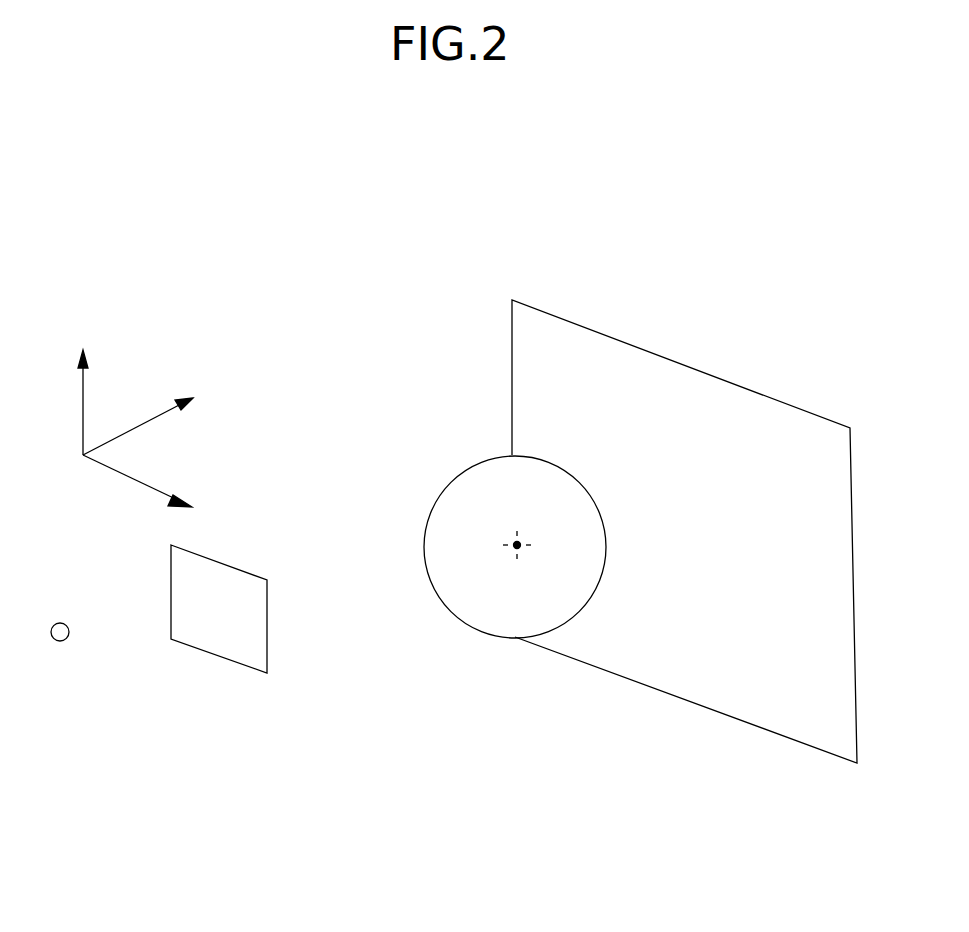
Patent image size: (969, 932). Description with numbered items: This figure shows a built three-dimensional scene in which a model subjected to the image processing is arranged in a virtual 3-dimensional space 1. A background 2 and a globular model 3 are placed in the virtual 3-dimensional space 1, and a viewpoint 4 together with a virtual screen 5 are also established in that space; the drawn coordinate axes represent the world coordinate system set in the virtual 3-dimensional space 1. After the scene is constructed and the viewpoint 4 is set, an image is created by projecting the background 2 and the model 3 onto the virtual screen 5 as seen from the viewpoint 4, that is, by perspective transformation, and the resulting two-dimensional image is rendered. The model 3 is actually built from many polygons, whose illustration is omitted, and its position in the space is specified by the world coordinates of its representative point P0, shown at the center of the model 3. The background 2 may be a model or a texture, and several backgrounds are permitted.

The virtual 3-dimensional space 1 is at (232, 305).
The background 2 is at (512, 364).
The globular model 3 is at (447, 478).
The viewpoint 4 is at (57, 622).
The virtual screen 5 is at (228, 561).
The representative point P0 is at (512, 548).